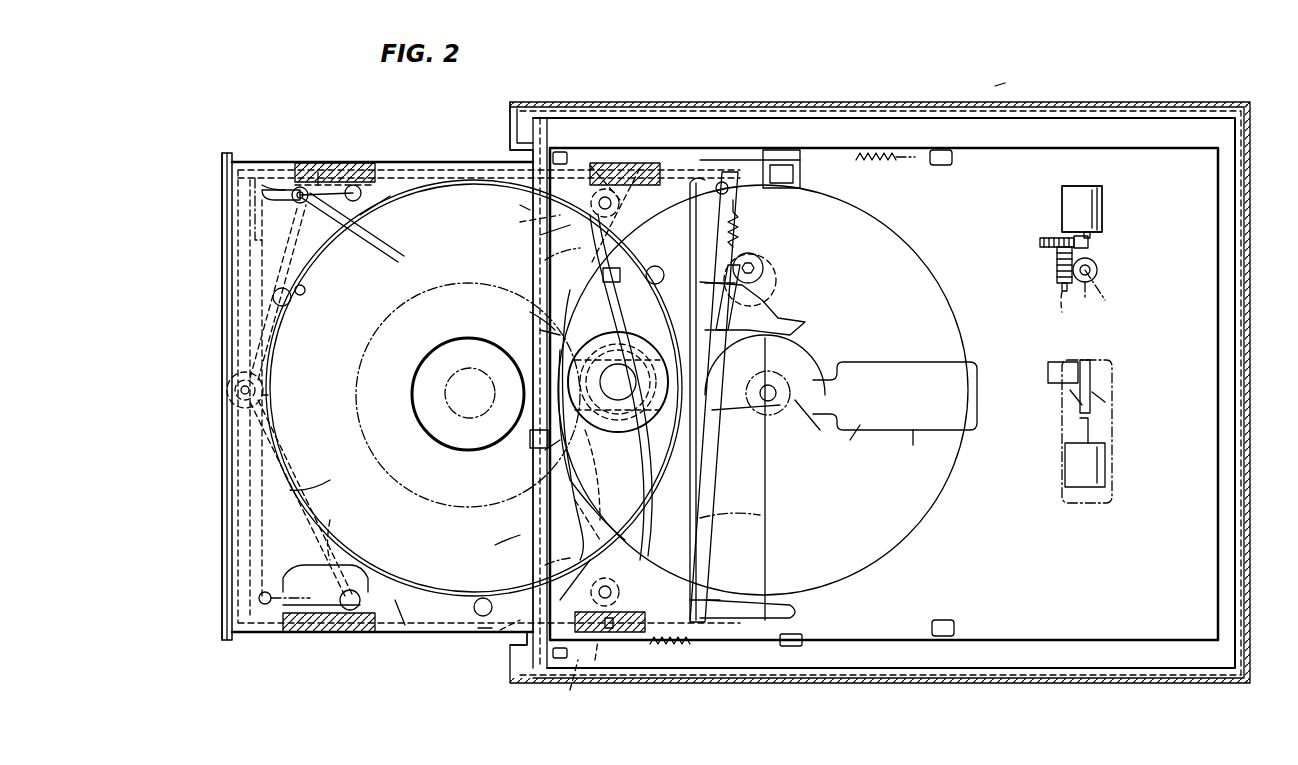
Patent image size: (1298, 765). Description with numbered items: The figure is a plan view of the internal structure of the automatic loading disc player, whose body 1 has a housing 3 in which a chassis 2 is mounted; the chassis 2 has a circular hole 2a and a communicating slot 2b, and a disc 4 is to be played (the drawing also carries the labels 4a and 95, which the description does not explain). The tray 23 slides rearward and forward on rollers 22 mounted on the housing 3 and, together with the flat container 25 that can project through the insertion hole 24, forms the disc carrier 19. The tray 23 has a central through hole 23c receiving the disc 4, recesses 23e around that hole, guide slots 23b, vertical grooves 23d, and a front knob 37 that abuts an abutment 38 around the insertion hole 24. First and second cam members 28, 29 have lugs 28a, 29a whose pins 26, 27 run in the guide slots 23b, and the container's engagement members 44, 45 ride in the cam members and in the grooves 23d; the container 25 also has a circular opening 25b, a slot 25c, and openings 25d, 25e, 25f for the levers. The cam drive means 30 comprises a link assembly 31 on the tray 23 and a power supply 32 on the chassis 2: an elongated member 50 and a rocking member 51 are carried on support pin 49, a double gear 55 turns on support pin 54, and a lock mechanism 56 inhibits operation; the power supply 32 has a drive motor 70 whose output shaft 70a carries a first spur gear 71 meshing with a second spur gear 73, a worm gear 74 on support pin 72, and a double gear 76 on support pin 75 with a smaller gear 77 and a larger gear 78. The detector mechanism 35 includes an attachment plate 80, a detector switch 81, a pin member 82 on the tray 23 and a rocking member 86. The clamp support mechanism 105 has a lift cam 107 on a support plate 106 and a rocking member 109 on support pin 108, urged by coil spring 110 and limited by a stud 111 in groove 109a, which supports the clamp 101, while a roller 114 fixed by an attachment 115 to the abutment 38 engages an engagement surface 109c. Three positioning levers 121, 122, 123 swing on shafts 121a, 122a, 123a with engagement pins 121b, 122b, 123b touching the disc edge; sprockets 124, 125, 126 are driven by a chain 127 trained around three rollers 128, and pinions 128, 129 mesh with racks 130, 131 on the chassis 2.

The body 1 is at (997, 80).
The chassis 2 is at (1218, 326).
The circular hole 2a is at (808, 425).
The slot 2b is at (922, 430).
The housing 3 is at (1252, 545).
The disc 4 is at (268, 435).
The disc center hole 4a is at (445, 410).
The disc carrier 19 is at (216, 440).
The rollers 22 is at (556, 152).
The tray 23 is at (270, 240).
The guide slots 23b is at (270, 188).
The through hole 23c is at (398, 622).
The vertical grooves 23d is at (322, 170).
The recesses 23e is at (286, 306).
The insertion hole 24 is at (512, 645).
The container 25 is at (312, 488).
The circular opening 25b is at (440, 360).
The slot 25c is at (540, 330).
The opening 25d is at (365, 390).
The opening 25e is at (495, 546).
The opening 25f is at (540, 236).
The pins 26 is at (318, 200).
The pins 27 is at (258, 598).
The first cam member 28 is at (372, 168).
The lug 28a is at (300, 172).
The second cam member 29 is at (348, 630).
The lug 29a is at (263, 634).
The cam drive means 30 is at (1098, 168).
The link assembly 31 is at (798, 283).
The power supply 32 is at (1108, 208).
The detector mechanism 35 is at (792, 385).
The knob 37 is at (222, 638).
The abutment 38 is at (512, 146).
The engagement members 44 is at (352, 172).
The engagement members 45 is at (330, 565).
The support pin 49 is at (766, 430).
The elongated member 50 is at (735, 208).
The rocking member 51 is at (772, 324).
The support pin 54 is at (790, 285).
The double gear 55 is at (776, 254).
The lock mechanism 56 is at (685, 285).
The drive motor 70 is at (1062, 210).
The output shaft 70a is at (1090, 236).
The first spur gear 71 is at (1088, 243).
The support pin 72 is at (1060, 290).
The second spur gear 73 is at (1040, 243).
The worm gear 74 is at (1057, 270).
The support pin 75 is at (1097, 270).
The double gear 76 is at (1072, 298).
The smaller gear 77 is at (1090, 300).
The larger gear 78 is at (1105, 300).
The attachment plate 80 is at (1097, 495).
The detector switch 81 is at (1048, 380).
The pin member 82 is at (782, 406).
The rocking member 86 is at (1090, 372).
The motor 95 is at (1065, 476).
The clamp 101 is at (572, 340).
The clamp support mechanism 105 is at (518, 207).
The support plate 106 is at (700, 518).
The lift cam 107 is at (530, 312).
The support pin 108 is at (545, 565).
The rocking member 109 is at (560, 480).
The groove 109a is at (590, 490).
The engagement surface 109c is at (545, 422).
The coil spring 110 is at (590, 505).
The stud 111 is at (600, 470).
The roller 114 is at (545, 455).
The attachment 115 is at (530, 445).
The positioning lever 121 is at (270, 322).
The shaft 121a is at (228, 388).
The engagement pin 121b is at (302, 290).
The positioning lever 122 is at (500, 632).
The shaft 122a is at (572, 690).
The engagement pin 122b is at (478, 630).
The positioning lever 123 is at (707, 150).
The shaft 123a is at (592, 165).
The engagement pin 123b is at (603, 276).
The sprocket 124 is at (270, 396).
The sprocket 125 is at (595, 662).
The sprocket 126 is at (520, 222).
The chain 127 is at (262, 220).
The rollers / pinion 128 is at (382, 212).
The pinion 129 is at (545, 262).
The rack 130 is at (685, 645).
The rack 131 is at (880, 158).